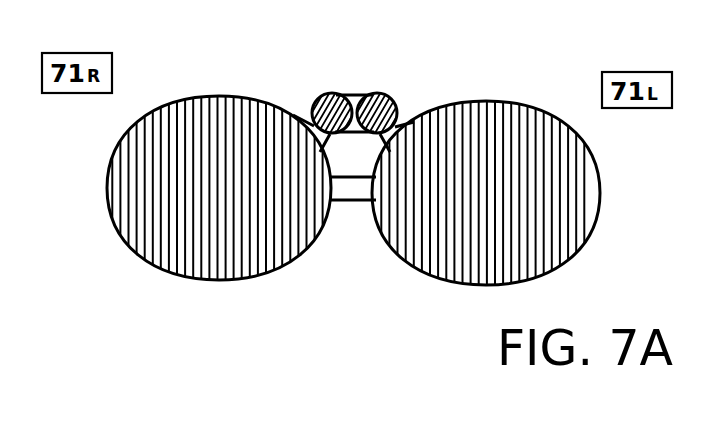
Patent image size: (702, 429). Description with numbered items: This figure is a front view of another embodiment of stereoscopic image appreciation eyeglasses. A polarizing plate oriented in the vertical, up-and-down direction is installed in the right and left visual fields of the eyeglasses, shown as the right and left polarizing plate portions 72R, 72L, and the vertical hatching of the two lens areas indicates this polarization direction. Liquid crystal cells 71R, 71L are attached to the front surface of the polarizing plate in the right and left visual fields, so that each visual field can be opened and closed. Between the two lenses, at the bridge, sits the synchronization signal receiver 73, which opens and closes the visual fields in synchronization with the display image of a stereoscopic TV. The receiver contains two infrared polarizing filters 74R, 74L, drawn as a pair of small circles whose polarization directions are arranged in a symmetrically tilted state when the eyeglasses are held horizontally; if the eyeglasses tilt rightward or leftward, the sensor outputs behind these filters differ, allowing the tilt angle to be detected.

The liquid crystal cell 71R is at (128, 136).
The polarizing plate 72R is at (189, 153).
The liquid crystal cell 71L is at (585, 144).
The polarizing plate 72L is at (524, 166).
The synchronization signal receiver 73 is at (355, 92).
The infrared polarizing filter 74R is at (316, 99).
The infrared polarizing filter 74L is at (397, 100).